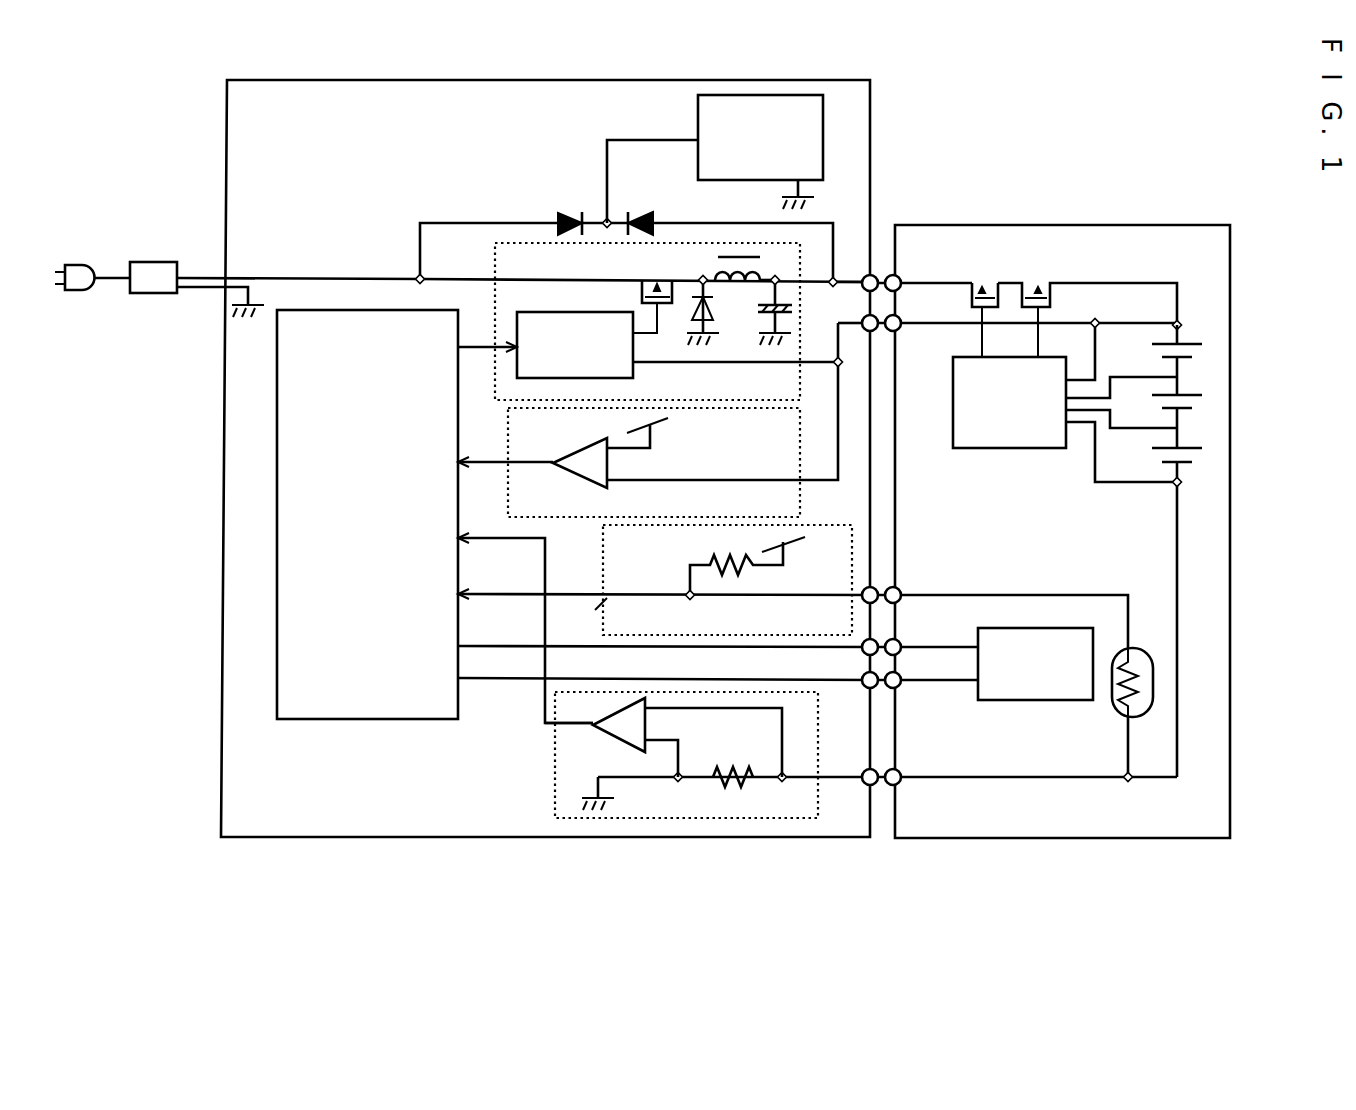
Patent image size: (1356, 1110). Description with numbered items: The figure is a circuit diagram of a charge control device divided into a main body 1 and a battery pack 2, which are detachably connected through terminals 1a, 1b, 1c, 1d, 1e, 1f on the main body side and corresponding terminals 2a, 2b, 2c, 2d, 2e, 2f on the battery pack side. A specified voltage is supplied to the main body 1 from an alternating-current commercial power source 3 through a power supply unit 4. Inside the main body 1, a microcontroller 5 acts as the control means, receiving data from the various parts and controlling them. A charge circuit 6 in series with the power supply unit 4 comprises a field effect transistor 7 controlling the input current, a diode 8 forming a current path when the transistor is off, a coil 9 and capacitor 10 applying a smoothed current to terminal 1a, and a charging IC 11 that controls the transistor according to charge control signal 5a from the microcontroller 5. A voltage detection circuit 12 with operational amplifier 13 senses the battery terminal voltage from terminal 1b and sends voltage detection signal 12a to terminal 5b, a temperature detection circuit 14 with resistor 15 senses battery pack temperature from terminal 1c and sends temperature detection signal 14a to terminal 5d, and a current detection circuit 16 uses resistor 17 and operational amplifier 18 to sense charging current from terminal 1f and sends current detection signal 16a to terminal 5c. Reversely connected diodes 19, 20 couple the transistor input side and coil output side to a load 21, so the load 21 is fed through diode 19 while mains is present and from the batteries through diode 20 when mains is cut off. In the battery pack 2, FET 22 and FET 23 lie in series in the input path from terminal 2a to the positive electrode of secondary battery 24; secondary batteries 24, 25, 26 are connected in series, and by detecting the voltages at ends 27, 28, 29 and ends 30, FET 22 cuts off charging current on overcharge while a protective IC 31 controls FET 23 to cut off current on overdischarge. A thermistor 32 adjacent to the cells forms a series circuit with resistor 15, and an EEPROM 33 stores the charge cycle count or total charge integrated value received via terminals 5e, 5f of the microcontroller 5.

The main body 1 is at (647, 840).
The terminal 1a is at (866, 272).
The terminal 1b is at (860, 320).
The terminal 1c is at (862, 590).
The terminal 1d is at (862, 642).
The terminal 1e is at (862, 677).
The terminal 1f is at (862, 772).
The battery pack 2 is at (1125, 843).
The terminal 2a is at (901, 280).
The terminal 2b is at (903, 320).
The terminal 2c is at (901, 590).
The terminal 2d is at (901, 642).
The terminal 2e is at (901, 677).
The terminal 2f is at (901, 770).
The alternating-current commercial power source 3 is at (83, 264).
The power supply unit 4 is at (157, 262).
The microcontroller 5 is at (270, 402).
The charge control signal 5a is at (463, 337).
The terminal 5b is at (478, 460).
The terminal 5c is at (493, 535).
The terminal 5d is at (487, 592).
The terminal 5e is at (480, 645).
The terminal 5f is at (492, 683).
The charge circuit 6 is at (490, 265).
The field effect transistor 7 is at (655, 283).
The diode 8 is at (715, 315).
The coil 9 is at (766, 271).
The capacitor 10 is at (792, 310).
The charging IC 11 is at (553, 310).
The voltage detection circuit 12 is at (802, 497).
The voltage detection signal 12a is at (523, 460).
The operational amplifier 13 is at (578, 468).
The temperature detection circuit 14 is at (603, 572).
The temperature detection signal 14a is at (582, 616).
The resistor 15 is at (708, 562).
The current detection circuit 16 is at (772, 820).
The current detection signal 16a is at (543, 724).
The resistor 17 is at (733, 772).
The operational amplifier 18 is at (612, 737).
The diode 19 is at (567, 213).
The diode 20 is at (638, 215).
The load 21 is at (823, 150).
The FET 22 is at (990, 277).
The FET 23 is at (1050, 277).
The secondary battery 24 is at (1195, 353).
The secondary battery 25 is at (1195, 403).
The secondary battery 26 is at (1195, 455).
The end 27 is at (1180, 322).
The end 28 is at (1178, 377).
The end 29 is at (1178, 430).
The end 30 is at (1180, 483).
The protective IC 31 is at (953, 448).
The thermistor 32 is at (1120, 712).
The EEPROM 33 is at (1024, 703).